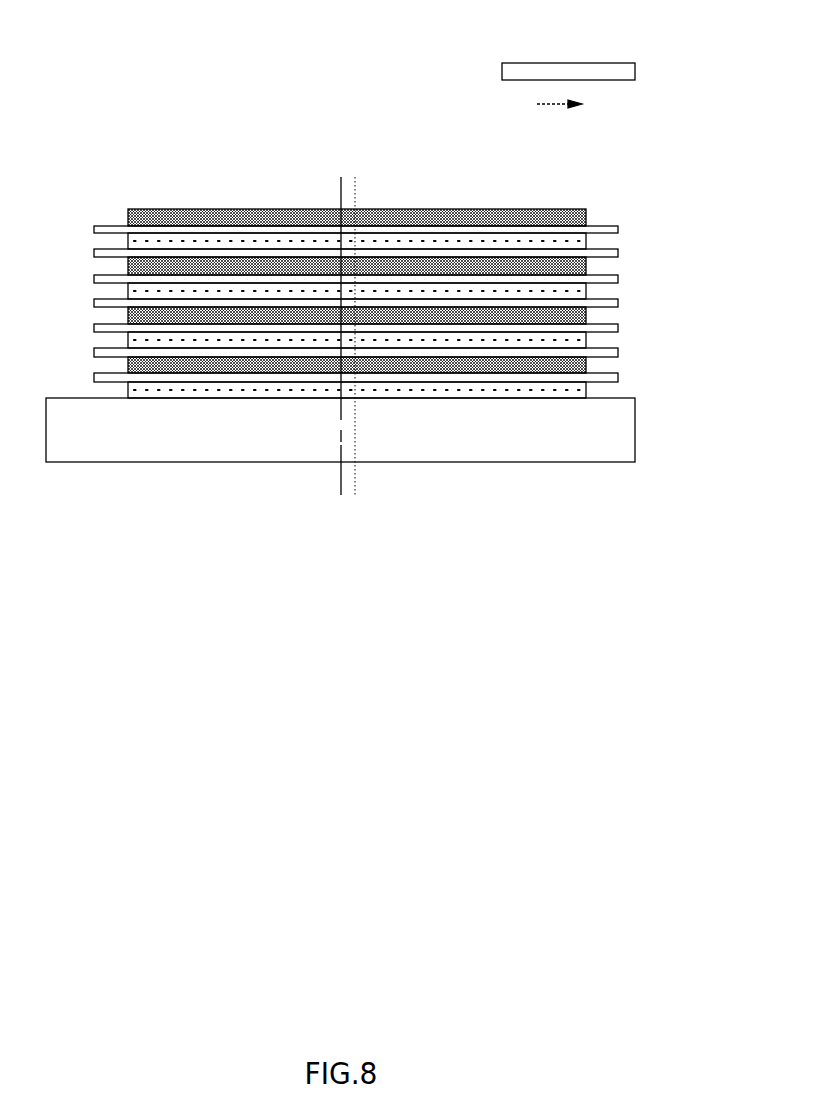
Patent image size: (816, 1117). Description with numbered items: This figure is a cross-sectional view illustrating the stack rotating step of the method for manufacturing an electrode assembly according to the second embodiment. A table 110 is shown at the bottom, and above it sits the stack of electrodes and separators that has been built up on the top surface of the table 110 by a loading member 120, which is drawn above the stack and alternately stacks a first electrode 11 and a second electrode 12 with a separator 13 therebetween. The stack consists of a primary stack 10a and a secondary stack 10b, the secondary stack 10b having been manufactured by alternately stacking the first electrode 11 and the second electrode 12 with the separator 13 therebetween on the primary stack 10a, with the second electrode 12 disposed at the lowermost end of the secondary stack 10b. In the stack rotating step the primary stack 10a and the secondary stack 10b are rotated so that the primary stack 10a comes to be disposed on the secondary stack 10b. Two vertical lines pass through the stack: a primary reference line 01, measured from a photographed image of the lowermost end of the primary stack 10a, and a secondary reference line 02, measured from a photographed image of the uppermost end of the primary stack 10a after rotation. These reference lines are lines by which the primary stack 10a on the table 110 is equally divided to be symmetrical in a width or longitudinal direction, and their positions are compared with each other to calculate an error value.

The primary stack 10a is at (396, 213).
The secondary stack 10b is at (655, 272).
The first electrode 11 is at (516, 218).
The second electrode 12 is at (418, 241).
The separator 13 is at (467, 232).
The primary reference line 01 is at (334, 325).
The secondary reference line 02 is at (363, 325).
The table 110 is at (470, 462).
The loading member 120 is at (568, 63).